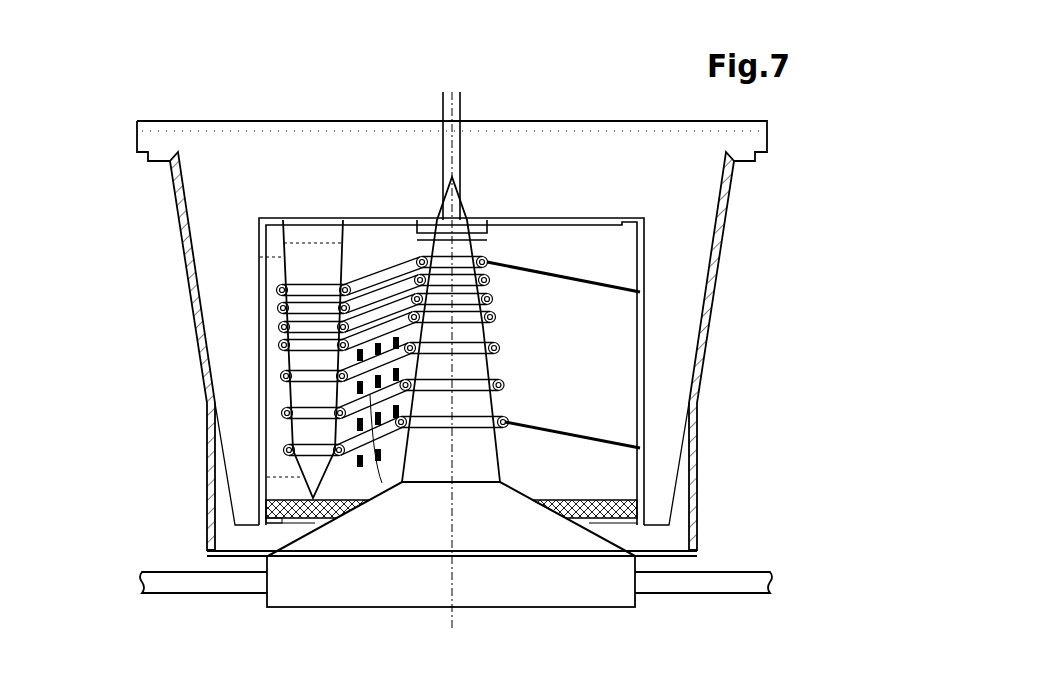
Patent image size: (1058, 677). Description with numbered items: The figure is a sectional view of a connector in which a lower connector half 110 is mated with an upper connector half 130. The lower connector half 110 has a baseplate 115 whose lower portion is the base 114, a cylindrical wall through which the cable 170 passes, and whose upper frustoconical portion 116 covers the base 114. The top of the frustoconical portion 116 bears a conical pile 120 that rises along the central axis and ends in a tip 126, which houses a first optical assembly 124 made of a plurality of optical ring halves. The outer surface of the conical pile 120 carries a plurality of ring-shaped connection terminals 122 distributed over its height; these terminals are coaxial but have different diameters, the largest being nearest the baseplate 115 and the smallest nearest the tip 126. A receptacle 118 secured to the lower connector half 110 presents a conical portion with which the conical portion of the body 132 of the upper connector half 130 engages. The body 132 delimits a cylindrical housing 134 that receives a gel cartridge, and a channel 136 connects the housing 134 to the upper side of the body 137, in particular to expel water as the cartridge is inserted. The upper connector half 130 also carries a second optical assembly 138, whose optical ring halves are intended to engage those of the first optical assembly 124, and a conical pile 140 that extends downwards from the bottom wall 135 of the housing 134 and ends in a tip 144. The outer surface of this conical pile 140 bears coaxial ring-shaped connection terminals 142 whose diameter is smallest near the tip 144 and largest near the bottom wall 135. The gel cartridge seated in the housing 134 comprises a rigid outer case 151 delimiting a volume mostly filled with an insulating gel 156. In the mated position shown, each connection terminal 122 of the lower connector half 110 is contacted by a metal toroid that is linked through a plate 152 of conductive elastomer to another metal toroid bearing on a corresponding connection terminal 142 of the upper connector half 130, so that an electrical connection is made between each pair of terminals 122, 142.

The lower connector half 110 is at (308, 622).
The base 114 is at (522, 588).
The baseplate 115 is at (420, 582).
The upper frustoconical portion 116 is at (597, 545).
The receptacle 118 is at (720, 245).
The conical pile 120 is at (475, 367).
The ring-shaped connection terminals 122 is at (467, 385).
The first optical assembly 124 is at (437, 210).
The tip 126 is at (478, 212).
The upper connector half 130 is at (355, 112).
The body 132 is at (623, 143).
The cylindrical housing 134 is at (259, 277).
The bottom wall 135 is at (357, 218).
The channel 136 is at (447, 120).
The body 137 is at (230, 118).
The second optical assembly 138 is at (480, 218).
The conical pile 140 is at (262, 257).
The ring-shaped connection terminals 142 is at (312, 408).
The tip 144 is at (311, 477).
The rigid outer case 151 is at (644, 257).
The plate 152 is at (380, 490).
The insulating gel 156 is at (643, 320).
The cable 170 is at (168, 580).